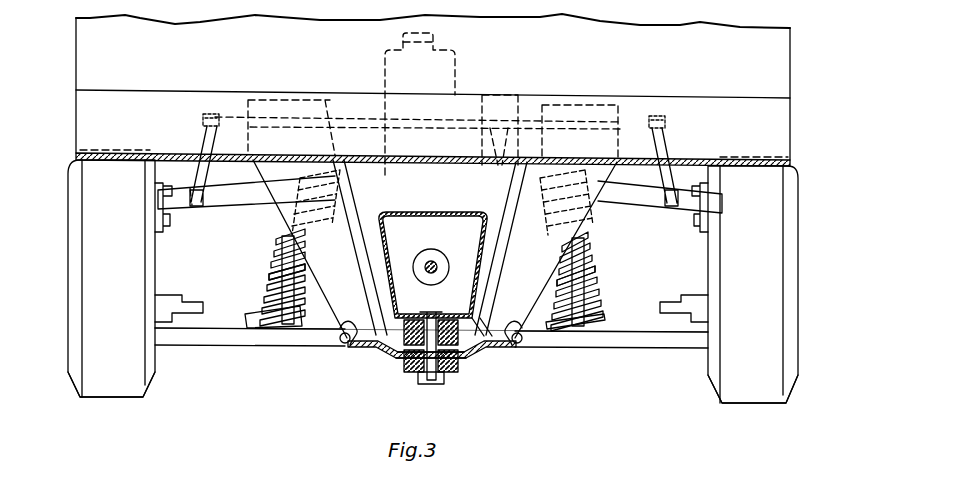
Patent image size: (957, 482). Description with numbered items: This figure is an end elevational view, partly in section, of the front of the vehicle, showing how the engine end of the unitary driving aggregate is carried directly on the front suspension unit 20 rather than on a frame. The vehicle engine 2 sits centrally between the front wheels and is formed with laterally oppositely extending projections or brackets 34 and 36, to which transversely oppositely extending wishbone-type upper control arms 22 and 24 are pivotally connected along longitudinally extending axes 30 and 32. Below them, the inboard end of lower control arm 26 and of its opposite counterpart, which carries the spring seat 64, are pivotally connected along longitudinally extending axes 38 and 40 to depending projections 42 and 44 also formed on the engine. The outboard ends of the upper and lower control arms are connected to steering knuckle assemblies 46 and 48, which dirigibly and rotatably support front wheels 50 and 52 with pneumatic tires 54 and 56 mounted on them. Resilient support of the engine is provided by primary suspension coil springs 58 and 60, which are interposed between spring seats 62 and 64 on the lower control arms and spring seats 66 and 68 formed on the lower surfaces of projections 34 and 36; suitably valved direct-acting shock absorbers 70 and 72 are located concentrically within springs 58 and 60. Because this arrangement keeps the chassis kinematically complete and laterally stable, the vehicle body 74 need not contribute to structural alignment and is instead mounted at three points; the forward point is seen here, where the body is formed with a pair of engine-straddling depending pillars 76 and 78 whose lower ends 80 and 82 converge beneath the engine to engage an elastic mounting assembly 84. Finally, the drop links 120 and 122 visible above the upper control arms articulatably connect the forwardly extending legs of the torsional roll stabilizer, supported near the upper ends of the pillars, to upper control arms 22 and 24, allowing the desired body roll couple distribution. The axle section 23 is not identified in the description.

The vehicle engine 2 is at (478, 84).
The front suspension unit 20 is at (366, 364).
The upper control arm 22 is at (662, 208).
The left axle section 23 is at (235, 350).
The upper control arm 24 is at (242, 210).
The lower control arm 26 is at (668, 350).
The longitudinally-extending axis 30 is at (530, 184).
The longitudinally-extending axis 32 is at (340, 192).
The projection or bracket 34 is at (492, 175).
The projection or bracket 36 is at (340, 170).
The longitudinally-extending axis 38 is at (518, 350).
The longitudinally-extending axis 40 is at (360, 352).
The depending projection 42 is at (525, 348).
The depending projection 44 is at (340, 345).
The steering knuckle assembly 46 is at (694, 232).
The steering knuckle assembly 48 is at (168, 235).
The front wheel 50 is at (715, 392).
The front wheel 52 is at (150, 384).
The pneumatic tire 54 is at (782, 268).
The pneumatic tire 56 is at (72, 305).
The primary suspension coil spring 58 is at (598, 285).
The primary suspension coil spring 60 is at (266, 291).
The spring seat 62 is at (660, 312).
The spring seat 64 is at (272, 336).
The spring seat 66 is at (586, 215).
The spring seat 68 is at (282, 208).
The direct-acting shock absorber 70 is at (586, 267).
The direct-acting shock absorber 72 is at (270, 279).
The vehicle body 74 is at (770, 77).
The depending pillar 76 is at (562, 304).
The depending pillar 78 is at (300, 334).
The lower end of pillar 80 is at (490, 360).
The lower end of pillar 82 is at (384, 360).
The elastic mounting assembly 84 is at (450, 366).
The drop link 120 is at (668, 138).
The drop link 122 is at (206, 138).